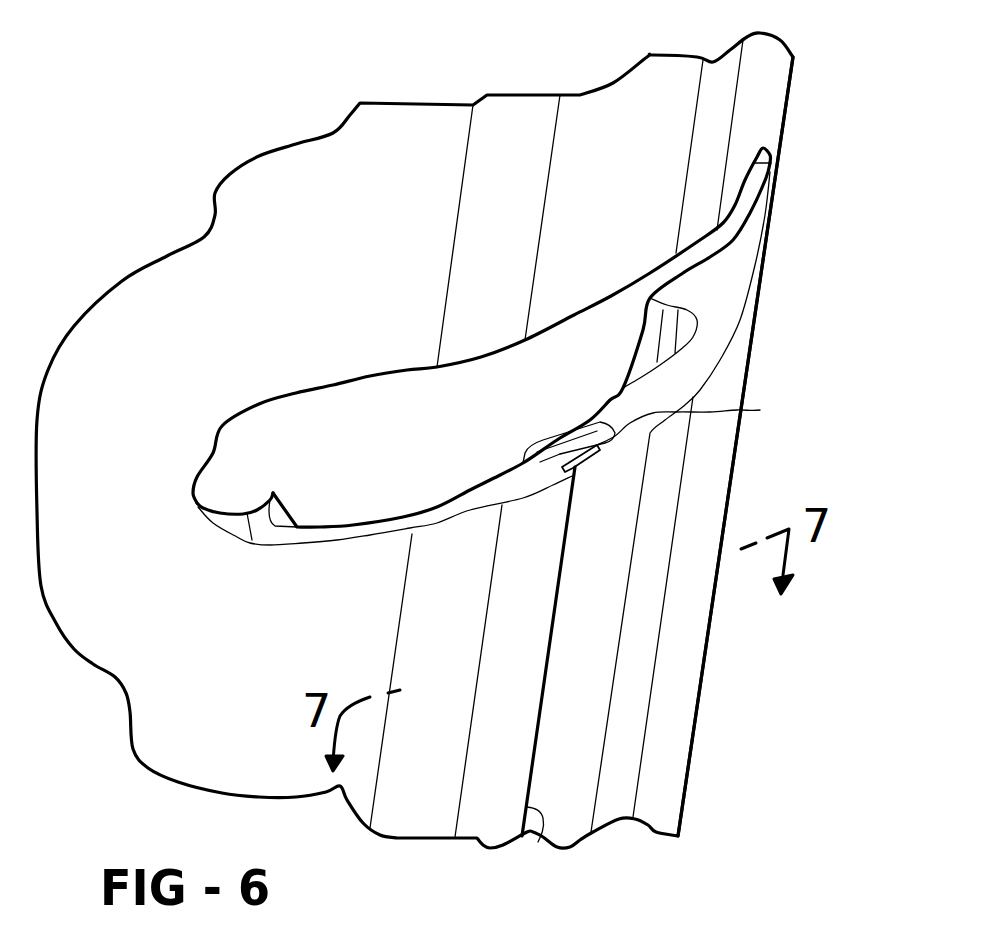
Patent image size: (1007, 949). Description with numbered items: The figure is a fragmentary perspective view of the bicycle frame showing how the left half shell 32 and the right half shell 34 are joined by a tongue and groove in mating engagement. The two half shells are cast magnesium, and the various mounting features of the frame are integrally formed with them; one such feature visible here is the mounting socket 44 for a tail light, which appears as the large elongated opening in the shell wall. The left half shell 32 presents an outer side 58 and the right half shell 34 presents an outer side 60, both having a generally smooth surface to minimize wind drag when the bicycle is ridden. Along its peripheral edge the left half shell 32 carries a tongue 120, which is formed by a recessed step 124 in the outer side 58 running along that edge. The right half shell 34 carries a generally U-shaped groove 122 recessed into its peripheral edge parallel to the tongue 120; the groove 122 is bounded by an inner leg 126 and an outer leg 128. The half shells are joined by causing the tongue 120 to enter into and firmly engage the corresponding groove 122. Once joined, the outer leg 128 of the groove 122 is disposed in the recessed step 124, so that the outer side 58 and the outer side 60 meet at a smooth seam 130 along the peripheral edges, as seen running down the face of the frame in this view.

The left half shell 32 is at (111, 621).
The right half shell 34 is at (757, 112).
The mounting socket 44 is at (297, 393).
The outer side 58 is at (408, 792).
The outer side 60 is at (674, 747).
The tongue 120 is at (567, 453).
The groove 122 is at (760, 410).
The recessed step 124 is at (570, 468).
The inner leg 126 is at (577, 450).
The outer leg 128 is at (597, 453).
The smooth seam 130 is at (540, 840).